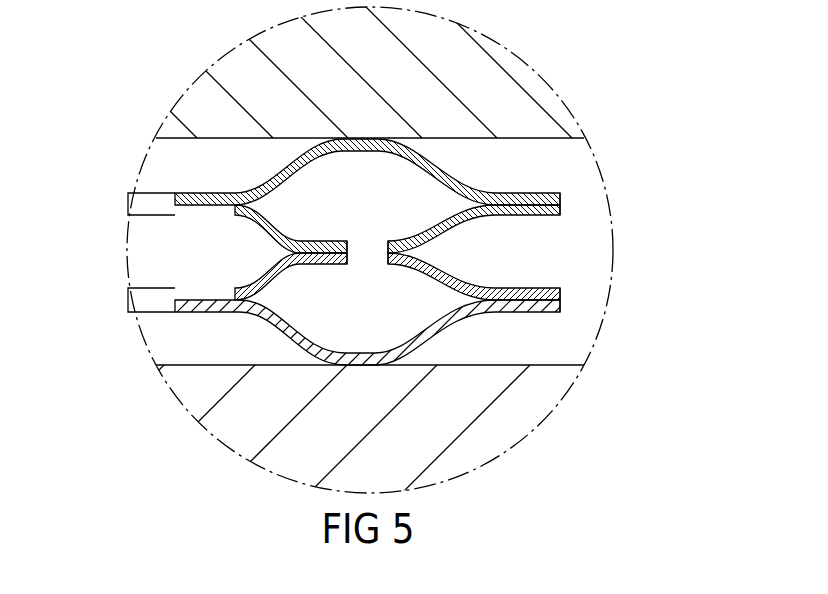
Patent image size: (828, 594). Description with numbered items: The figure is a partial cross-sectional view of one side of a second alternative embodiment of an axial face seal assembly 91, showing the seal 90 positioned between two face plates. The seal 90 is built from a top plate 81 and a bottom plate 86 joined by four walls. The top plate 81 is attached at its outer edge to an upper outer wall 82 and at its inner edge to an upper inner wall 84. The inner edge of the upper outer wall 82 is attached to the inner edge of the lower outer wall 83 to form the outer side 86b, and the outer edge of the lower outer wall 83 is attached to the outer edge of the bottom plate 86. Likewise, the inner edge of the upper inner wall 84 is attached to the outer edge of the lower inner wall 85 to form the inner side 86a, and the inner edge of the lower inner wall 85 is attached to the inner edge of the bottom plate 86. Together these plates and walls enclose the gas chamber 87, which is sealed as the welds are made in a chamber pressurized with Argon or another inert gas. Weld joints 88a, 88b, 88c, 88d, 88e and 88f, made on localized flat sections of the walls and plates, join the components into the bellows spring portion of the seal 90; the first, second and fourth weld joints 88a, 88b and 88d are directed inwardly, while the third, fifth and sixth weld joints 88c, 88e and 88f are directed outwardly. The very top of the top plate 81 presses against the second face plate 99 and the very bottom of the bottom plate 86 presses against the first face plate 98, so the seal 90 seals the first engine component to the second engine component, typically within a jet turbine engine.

The second face plate 99 is at (487, 56).
The first face plate 98 is at (458, 462).
The axial face seal assembly 91 is at (572, 90).
The seal 90 is at (453, 167).
The top plate 81 is at (297, 174).
The upper outer wall 82 is at (495, 230).
The lower outer wall 83 is at (487, 272).
The upper inner wall 84 is at (242, 227).
The lower inner wall 85 is at (247, 275).
The bottom plate 86 is at (460, 322).
The gas chamber 87 is at (381, 184).
The first weld joint 88a is at (173, 205).
The second weld joint 88b is at (173, 300).
The third weld joint 88c is at (349, 250).
The fourth weld joint 88d is at (387, 253).
The fifth weld joint 88e is at (562, 203).
The sixth weld joint 88f is at (562, 300).
The inner side 86a is at (252, 263).
The outer side 86b is at (484, 258).